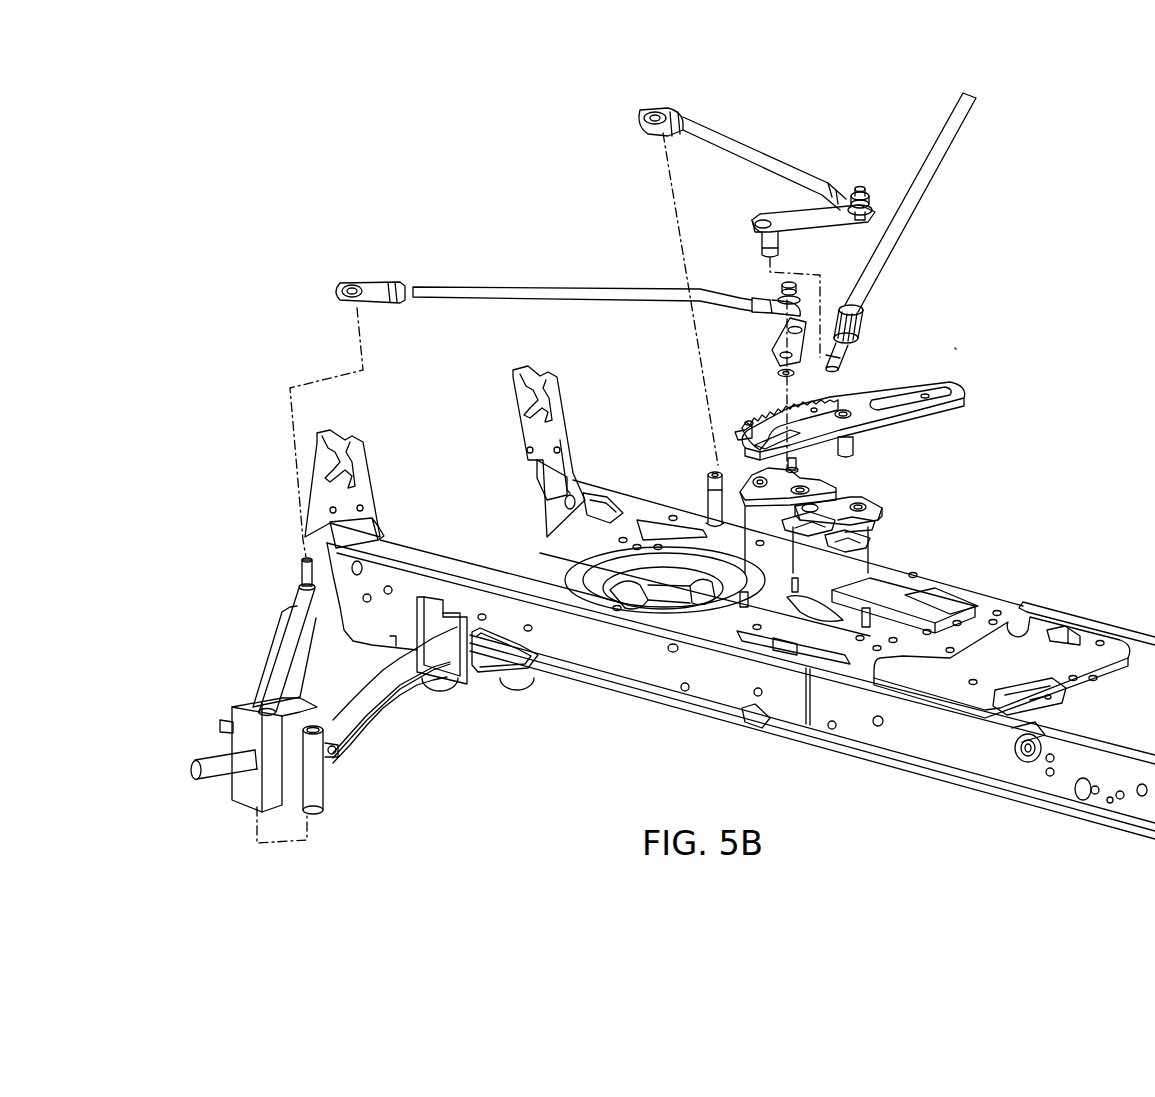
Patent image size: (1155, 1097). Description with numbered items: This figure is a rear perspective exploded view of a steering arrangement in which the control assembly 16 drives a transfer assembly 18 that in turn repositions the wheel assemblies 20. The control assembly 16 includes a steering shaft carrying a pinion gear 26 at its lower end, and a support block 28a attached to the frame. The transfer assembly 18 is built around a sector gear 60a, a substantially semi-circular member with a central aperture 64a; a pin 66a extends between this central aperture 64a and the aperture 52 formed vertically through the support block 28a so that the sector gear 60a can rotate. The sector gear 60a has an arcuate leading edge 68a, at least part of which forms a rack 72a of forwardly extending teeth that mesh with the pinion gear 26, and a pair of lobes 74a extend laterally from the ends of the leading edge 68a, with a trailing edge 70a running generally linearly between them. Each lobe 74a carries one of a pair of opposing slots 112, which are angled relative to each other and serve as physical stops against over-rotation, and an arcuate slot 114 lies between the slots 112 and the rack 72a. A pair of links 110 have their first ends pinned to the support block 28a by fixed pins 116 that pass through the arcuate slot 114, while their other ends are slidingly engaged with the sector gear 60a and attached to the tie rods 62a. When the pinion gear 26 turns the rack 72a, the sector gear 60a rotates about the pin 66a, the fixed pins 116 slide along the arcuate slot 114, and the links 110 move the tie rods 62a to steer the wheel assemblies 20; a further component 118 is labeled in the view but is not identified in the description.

The control assembly 16 is at (957, 165).
The transfer assembly 18 is at (955, 348).
The wheel assemblies 20 is at (190, 690).
The pinion gear 26 is at (853, 337).
The support block 28a is at (873, 520).
The aperture 52 is at (856, 498).
The sector gear 60a is at (933, 413).
The tie rods 62a is at (748, 153).
The central aperture 64a is at (850, 400).
The pin 66a is at (851, 440).
The arcuate leading edge 68a is at (743, 402).
The trailing edge 70a is at (828, 445).
The rack 72a is at (760, 400).
The lobes 74a is at (750, 447).
The links 110 is at (800, 231).
The slots 112 is at (925, 394).
The arcuate slot 114 is at (815, 408).
The fixed pin 116 is at (765, 242).
The ball joint 118 is at (866, 200).